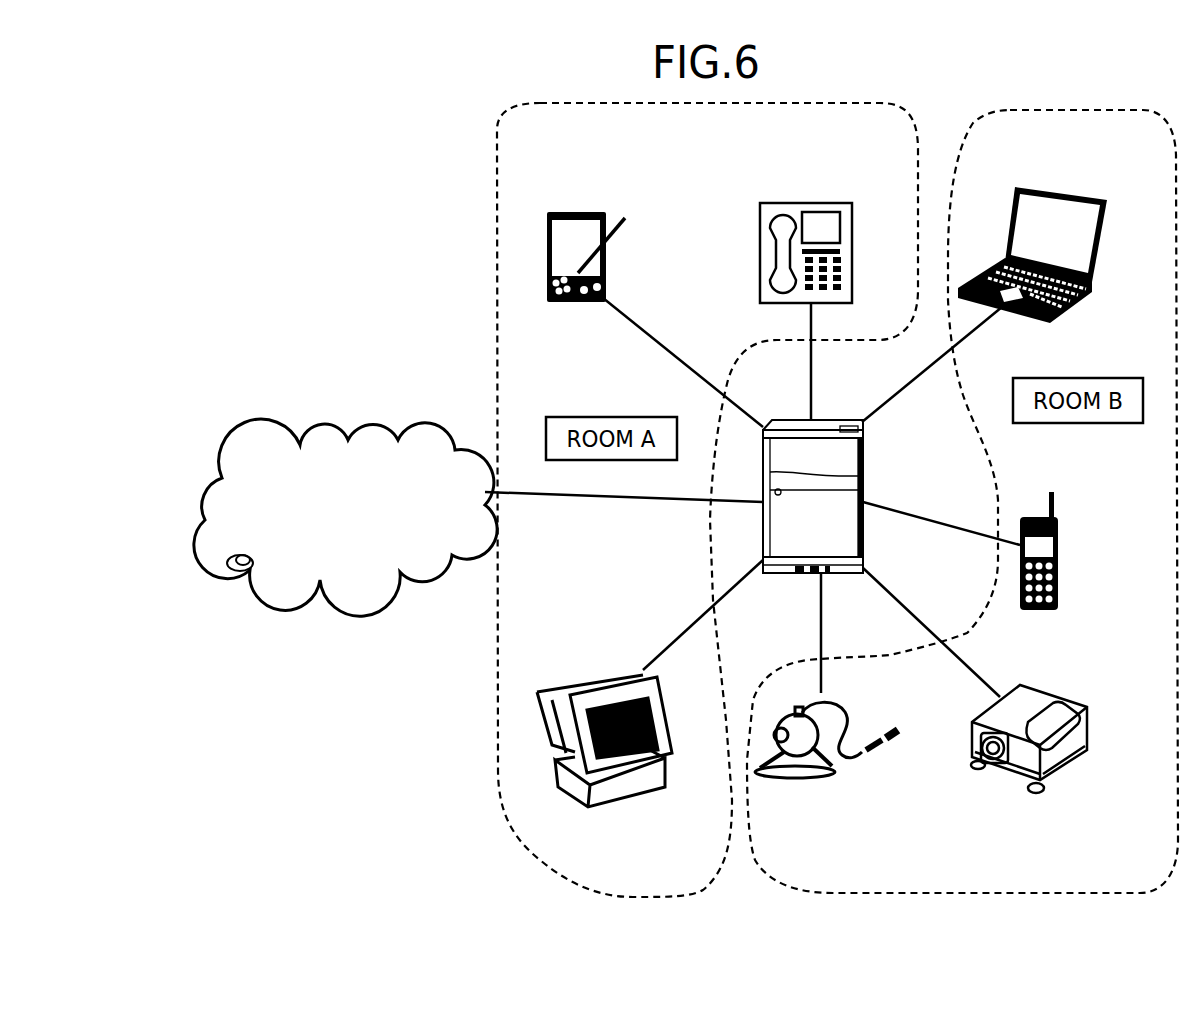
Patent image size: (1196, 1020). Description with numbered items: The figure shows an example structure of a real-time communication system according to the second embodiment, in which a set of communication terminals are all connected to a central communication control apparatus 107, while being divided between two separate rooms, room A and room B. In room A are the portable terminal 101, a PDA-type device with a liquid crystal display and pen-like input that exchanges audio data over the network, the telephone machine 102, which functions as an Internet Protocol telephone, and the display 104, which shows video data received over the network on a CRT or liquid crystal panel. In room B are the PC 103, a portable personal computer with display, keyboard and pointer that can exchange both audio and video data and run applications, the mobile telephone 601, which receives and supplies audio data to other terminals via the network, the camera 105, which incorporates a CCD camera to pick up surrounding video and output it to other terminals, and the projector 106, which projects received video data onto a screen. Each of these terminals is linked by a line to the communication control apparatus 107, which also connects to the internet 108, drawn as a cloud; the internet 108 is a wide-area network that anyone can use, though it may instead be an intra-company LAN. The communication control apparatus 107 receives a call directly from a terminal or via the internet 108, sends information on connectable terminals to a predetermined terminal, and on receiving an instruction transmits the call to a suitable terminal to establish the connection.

The portable terminal 101 is at (578, 212).
The telephone machine 102 is at (808, 202).
The PC 103 is at (1067, 190).
The display 104 is at (607, 803).
The camera 105 is at (803, 780).
The projector 106 is at (1040, 792).
The communication control apparatus 107 is at (865, 481).
The internet 108 is at (383, 427).
The mobile telephone 601 is at (1060, 526).